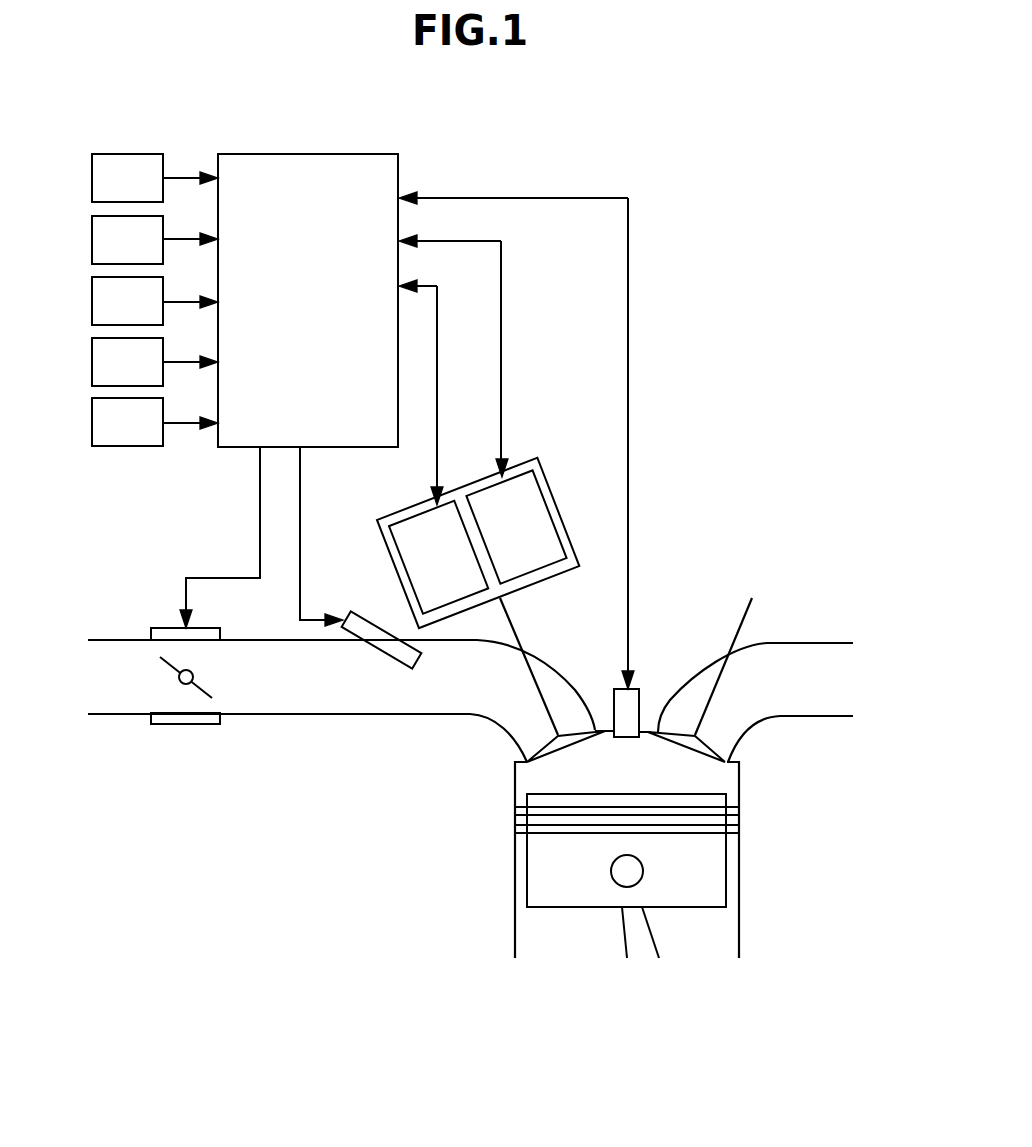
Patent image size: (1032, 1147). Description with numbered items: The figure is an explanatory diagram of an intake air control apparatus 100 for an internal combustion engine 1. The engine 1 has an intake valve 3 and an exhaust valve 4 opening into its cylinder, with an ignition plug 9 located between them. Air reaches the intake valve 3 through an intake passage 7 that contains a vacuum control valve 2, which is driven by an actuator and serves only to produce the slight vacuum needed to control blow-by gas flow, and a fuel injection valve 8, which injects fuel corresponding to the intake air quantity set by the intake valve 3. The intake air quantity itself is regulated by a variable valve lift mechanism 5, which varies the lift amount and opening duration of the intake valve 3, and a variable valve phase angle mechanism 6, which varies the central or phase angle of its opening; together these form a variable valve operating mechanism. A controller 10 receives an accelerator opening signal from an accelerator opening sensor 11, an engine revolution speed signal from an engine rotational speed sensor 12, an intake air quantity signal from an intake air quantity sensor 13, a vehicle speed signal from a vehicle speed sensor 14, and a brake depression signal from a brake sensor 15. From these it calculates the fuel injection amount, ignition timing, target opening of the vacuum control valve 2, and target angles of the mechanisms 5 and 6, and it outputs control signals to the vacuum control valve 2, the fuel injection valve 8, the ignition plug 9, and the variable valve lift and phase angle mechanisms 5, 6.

The intake air control apparatus 100 is at (722, 220).
The internal combustion engine 1 is at (490, 888).
The vacuum control valve 2 is at (165, 663).
The intake valve 3 is at (538, 685).
The exhaust valve 4 is at (708, 703).
The variable valve lift mechanism 5 is at (420, 543).
The variable valve phase angle mechanism 6 is at (538, 528).
The intake passage 7 is at (467, 700).
The fuel injection valve 8 is at (377, 652).
The ignition plug 9 is at (628, 702).
The controller 10 is at (308, 300).
The accelerator opening sensor 11 is at (155, 178).
The engine rotational speed sensor 12 is at (155, 240).
The intake air quantity sensor 13 is at (155, 301).
The vehicle speed sensor 14 is at (155, 362).
The brake sensor 15 is at (155, 422).